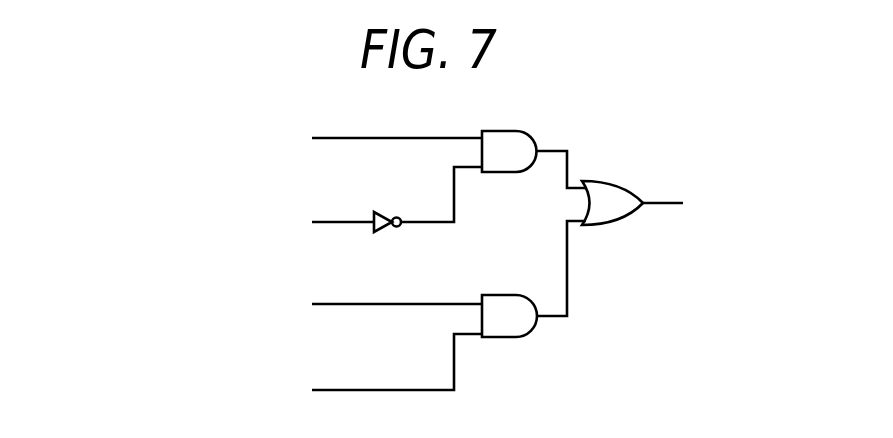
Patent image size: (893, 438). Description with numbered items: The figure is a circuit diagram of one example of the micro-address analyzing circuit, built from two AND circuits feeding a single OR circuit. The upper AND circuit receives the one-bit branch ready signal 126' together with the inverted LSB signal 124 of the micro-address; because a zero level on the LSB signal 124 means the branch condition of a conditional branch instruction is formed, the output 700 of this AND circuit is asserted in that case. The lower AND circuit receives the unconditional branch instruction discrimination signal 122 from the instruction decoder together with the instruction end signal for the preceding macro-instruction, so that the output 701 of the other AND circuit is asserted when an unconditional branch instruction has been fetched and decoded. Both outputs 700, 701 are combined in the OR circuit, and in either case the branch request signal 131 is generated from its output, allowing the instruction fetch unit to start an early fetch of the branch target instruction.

The branch ready signal 126' is at (292, 123).
The LSB signal 124 is at (349, 219).
The unconditional branch instruction discrimination signal 122 is at (350, 302).
The output of one AND circuit 700 is at (552, 148).
The output of the other AND circuit 701 is at (568, 288).
The branch request signal 131 is at (666, 199).